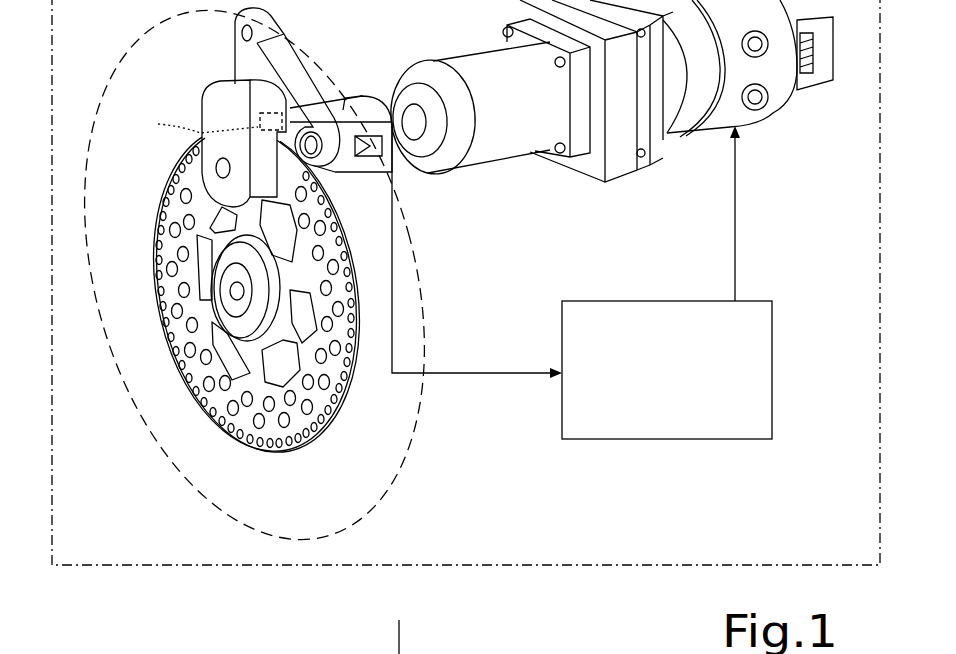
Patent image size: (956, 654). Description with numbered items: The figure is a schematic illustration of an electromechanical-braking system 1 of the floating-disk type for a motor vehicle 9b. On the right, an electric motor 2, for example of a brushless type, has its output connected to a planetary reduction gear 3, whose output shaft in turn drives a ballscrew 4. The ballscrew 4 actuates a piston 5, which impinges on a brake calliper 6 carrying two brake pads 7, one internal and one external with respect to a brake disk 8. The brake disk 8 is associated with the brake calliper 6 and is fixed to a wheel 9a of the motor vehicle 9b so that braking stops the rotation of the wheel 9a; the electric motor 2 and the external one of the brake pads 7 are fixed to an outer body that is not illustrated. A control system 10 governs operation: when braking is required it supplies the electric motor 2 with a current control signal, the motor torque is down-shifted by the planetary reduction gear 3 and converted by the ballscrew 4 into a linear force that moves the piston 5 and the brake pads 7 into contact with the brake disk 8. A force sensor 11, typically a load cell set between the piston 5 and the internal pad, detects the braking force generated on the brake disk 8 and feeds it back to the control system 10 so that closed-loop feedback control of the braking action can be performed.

The electromechanical-braking system 1 is at (577, 121).
The electric motor 2 is at (806, 100).
The planetary reduction gear 3 is at (619, 157).
The ballscrew 4 is at (498, 143).
The piston 5 is at (373, 92).
The brake calliper 6 is at (297, 66).
The brake pads 7 is at (236, 84).
The brake disk 8 is at (338, 400).
The wheel 9a is at (175, 467).
The motor vehicle 9b is at (497, 557).
The control system 10 is at (665, 431).
The force sensor 11 is at (206, 122).